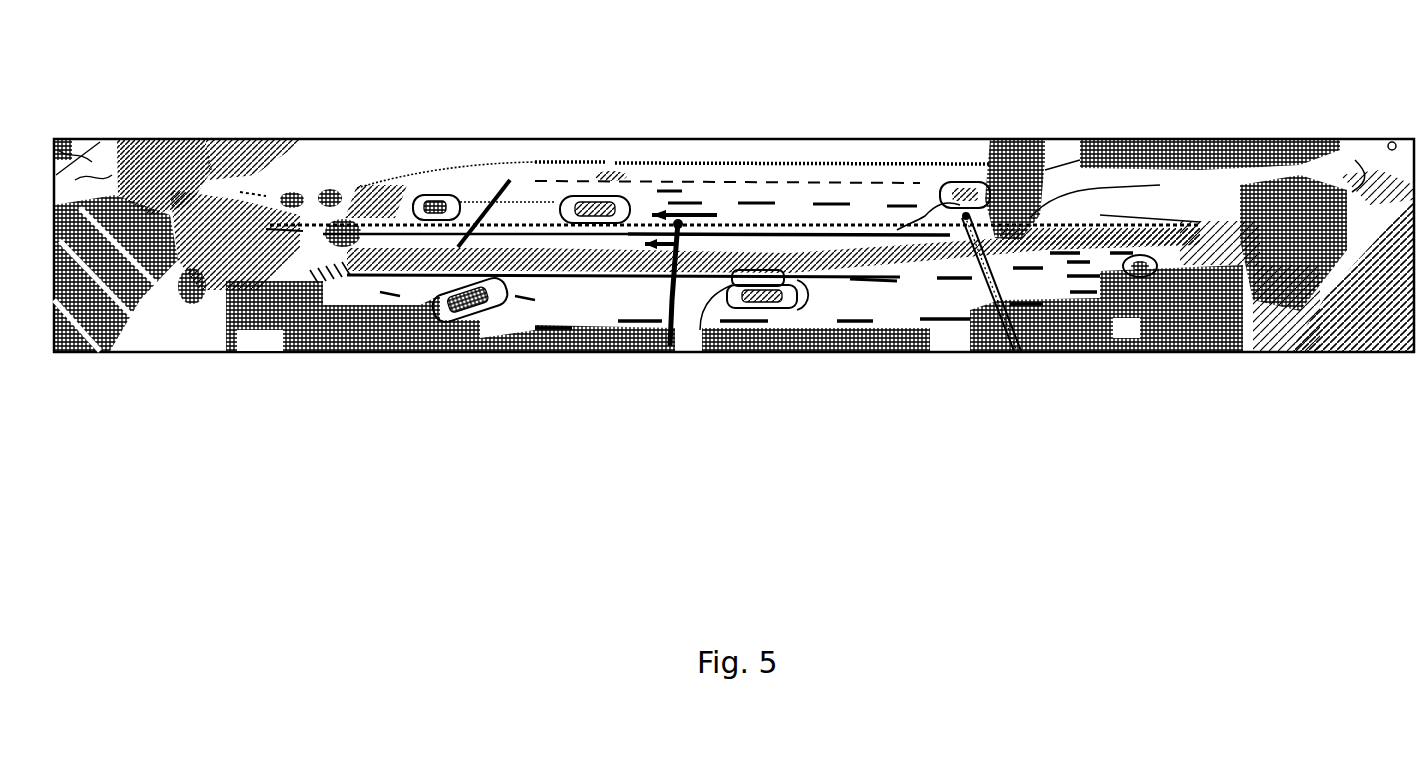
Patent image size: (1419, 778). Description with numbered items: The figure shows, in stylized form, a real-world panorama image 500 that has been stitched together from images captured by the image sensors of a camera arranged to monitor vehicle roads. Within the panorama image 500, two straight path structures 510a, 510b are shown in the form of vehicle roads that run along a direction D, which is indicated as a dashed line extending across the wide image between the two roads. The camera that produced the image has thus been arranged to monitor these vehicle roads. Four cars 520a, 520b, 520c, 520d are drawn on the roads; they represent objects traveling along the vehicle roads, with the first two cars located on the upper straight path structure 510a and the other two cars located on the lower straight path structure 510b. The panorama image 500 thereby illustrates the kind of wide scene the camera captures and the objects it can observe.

The panorama image 500 is at (212, 100).
The straight path structure 510a is at (725, 205).
The straight path structure 510b is at (610, 315).
The car 520a is at (430, 193).
The car 520b is at (585, 196).
The car 520c is at (488, 316).
The car 520d is at (768, 309).
The direction D is at (898, 226).